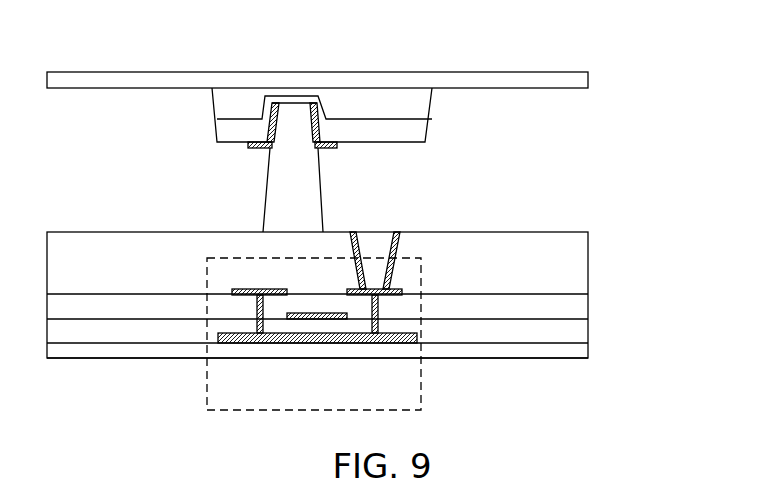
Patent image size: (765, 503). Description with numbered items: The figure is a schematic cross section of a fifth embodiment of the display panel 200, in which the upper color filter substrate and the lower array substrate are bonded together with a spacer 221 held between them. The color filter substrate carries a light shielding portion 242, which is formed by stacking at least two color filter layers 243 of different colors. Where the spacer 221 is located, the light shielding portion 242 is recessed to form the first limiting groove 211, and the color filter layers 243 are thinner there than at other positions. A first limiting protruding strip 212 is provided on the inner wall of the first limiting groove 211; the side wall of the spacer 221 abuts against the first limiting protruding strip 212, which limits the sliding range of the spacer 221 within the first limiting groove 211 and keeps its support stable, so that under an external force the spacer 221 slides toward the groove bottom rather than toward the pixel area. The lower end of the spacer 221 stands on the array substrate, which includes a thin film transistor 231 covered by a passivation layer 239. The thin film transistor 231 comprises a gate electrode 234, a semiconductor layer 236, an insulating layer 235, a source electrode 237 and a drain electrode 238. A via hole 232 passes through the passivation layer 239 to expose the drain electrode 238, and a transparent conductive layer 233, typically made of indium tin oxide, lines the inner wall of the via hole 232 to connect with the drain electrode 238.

The display panel 200 is at (116, 54).
The light shielding portion 242 is at (441, 118).
The color filter layer 243 is at (400, 103).
The first limiting groove 211 is at (298, 123).
The first limiting protruding strip 212 is at (273, 135).
The spacer 221 is at (297, 208).
The passivation layer 239 is at (563, 255).
The insulating layer 235 is at (563, 308).
The thin film transistor 231 is at (422, 333).
The via hole 232 is at (370, 248).
The transparent conductive layer 233 is at (397, 231).
The gate electrode 234 is at (310, 319).
The semiconductor layer 236 is at (335, 343).
The source electrode 237 is at (255, 314).
The drain electrode 238 is at (373, 333).